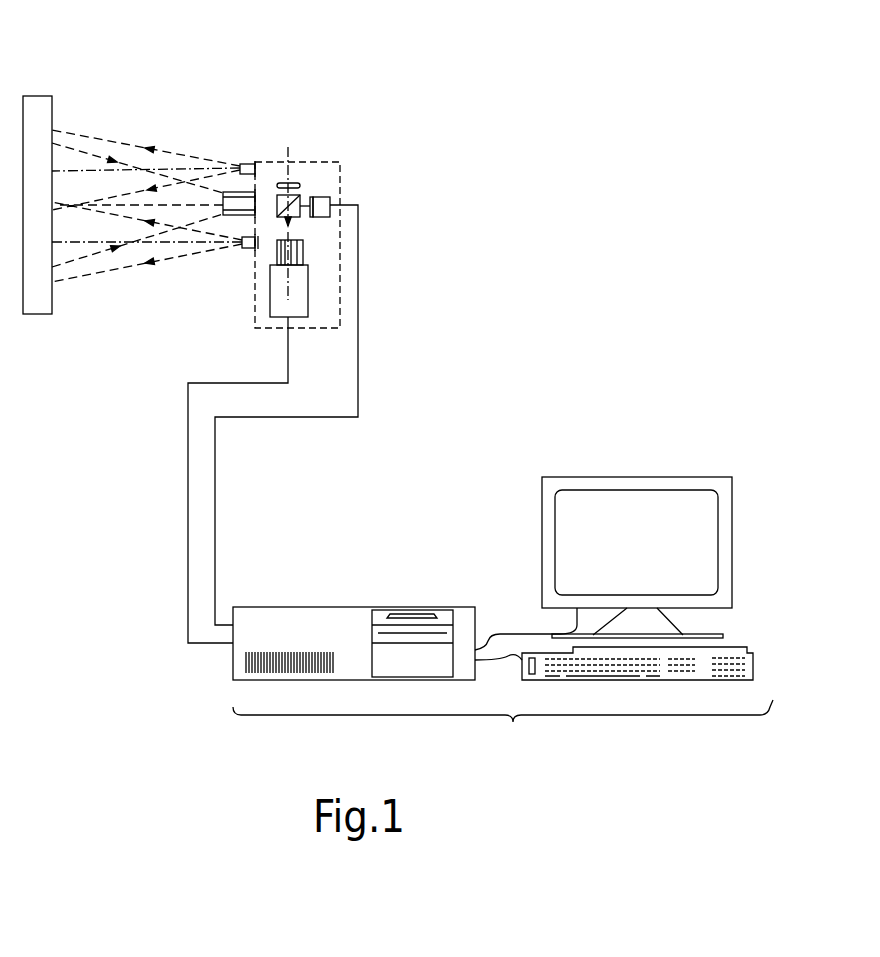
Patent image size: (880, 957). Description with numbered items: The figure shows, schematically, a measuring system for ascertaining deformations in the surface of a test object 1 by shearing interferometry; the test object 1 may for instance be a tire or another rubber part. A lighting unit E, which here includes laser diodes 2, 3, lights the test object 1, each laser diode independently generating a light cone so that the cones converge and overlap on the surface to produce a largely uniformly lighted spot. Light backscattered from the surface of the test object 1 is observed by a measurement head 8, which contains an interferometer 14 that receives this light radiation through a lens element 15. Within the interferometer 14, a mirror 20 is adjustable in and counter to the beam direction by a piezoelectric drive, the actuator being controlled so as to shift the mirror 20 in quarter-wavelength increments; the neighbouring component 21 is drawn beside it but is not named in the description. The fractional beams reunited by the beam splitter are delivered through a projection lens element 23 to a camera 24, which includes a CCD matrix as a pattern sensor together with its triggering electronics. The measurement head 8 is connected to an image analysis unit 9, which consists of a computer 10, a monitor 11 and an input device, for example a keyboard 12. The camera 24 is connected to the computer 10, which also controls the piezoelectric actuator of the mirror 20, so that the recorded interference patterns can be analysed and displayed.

The test object 1 is at (42, 108).
The laser diode 2 is at (242, 165).
The laser diode 3 is at (243, 247).
The measurement head 8 is at (314, 140).
The image analysis unit 9 is at (503, 727).
The computer 10 is at (340, 622).
The monitor 11 is at (588, 537).
The keyboard 12 is at (753, 655).
The interferometer 14 is at (315, 175).
The lens element 15 is at (229, 196).
The mirror 20 is at (314, 198).
The photodetector 21 is at (331, 198).
The projection lens element 23 is at (278, 252).
The camera 24 is at (280, 305).
The lighting unit E is at (243, 147).